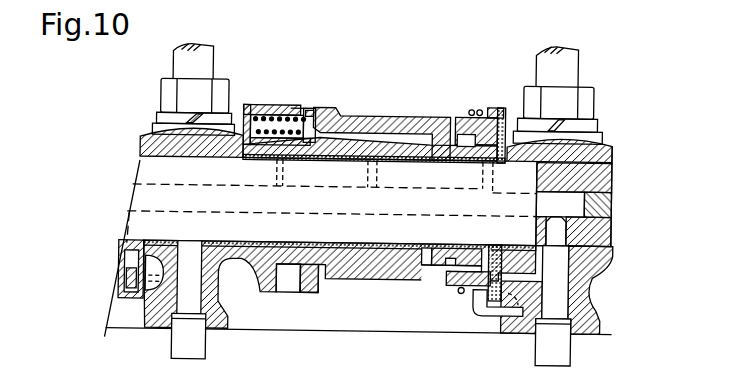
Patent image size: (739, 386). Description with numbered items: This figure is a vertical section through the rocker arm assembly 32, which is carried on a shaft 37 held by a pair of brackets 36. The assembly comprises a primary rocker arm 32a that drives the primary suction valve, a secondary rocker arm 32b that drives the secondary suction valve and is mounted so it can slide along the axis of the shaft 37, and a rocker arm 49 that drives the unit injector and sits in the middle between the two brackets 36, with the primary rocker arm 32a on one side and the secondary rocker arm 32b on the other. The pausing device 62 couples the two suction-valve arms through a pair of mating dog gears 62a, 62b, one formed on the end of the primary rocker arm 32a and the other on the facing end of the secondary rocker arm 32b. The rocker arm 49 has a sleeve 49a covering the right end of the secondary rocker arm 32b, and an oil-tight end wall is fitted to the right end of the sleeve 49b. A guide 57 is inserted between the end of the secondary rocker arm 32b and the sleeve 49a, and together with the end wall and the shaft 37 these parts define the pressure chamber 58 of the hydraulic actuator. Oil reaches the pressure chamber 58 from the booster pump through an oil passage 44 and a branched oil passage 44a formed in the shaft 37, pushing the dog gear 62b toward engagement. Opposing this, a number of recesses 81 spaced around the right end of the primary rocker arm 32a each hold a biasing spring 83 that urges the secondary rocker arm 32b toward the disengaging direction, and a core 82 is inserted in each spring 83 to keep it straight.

The rocker arm assembly 32 is at (362, 95).
The primary rocker arm 32a is at (358, 98).
The secondary rocker arm 32b is at (393, 109).
The bracket 36 is at (152, 138).
The shaft 37 is at (613, 175).
The oil passage 44 is at (447, 210).
The branched oil passage 44a is at (483, 183).
The rocker arm 49 is at (380, 277).
The sleeve 49a is at (456, 287).
The sleeve 49b is at (514, 288).
The guide 57 is at (457, 112).
The pressure chamber 58 is at (498, 104).
The pausing device 62 is at (300, 325).
The dog gear 62a is at (295, 290).
The dog gear 62b is at (306, 291).
The recess 81 is at (282, 106).
The core 82 is at (262, 111).
The biasing spring 83 is at (257, 108).